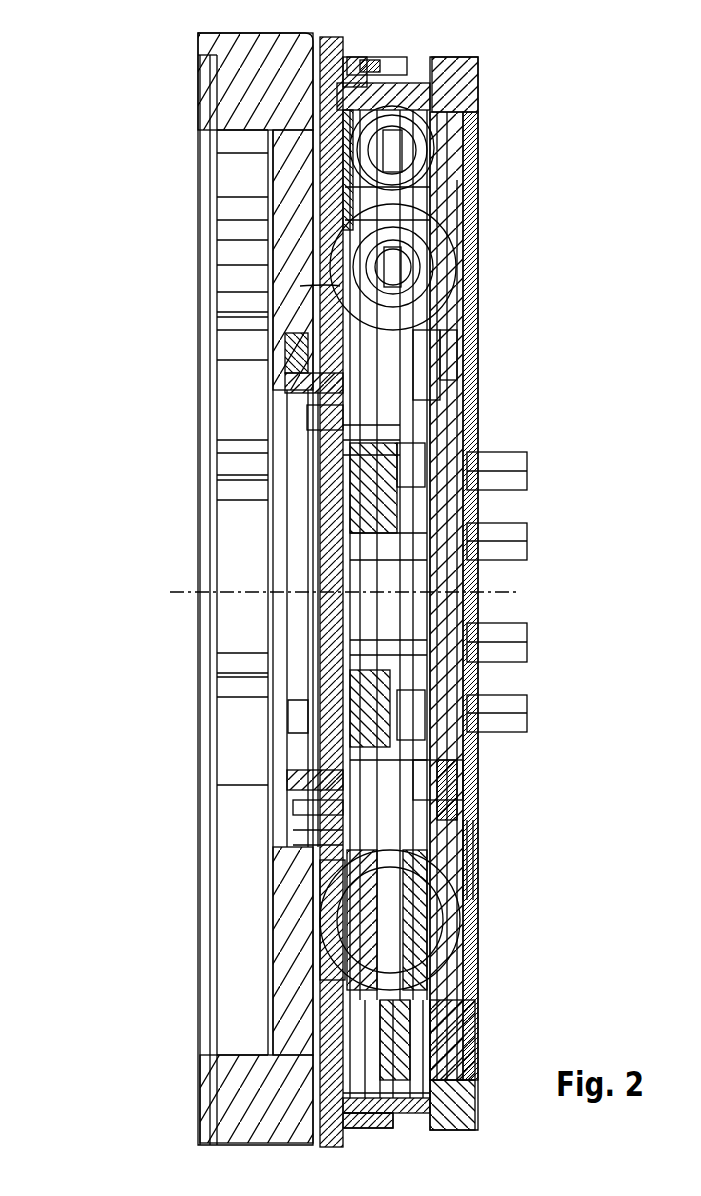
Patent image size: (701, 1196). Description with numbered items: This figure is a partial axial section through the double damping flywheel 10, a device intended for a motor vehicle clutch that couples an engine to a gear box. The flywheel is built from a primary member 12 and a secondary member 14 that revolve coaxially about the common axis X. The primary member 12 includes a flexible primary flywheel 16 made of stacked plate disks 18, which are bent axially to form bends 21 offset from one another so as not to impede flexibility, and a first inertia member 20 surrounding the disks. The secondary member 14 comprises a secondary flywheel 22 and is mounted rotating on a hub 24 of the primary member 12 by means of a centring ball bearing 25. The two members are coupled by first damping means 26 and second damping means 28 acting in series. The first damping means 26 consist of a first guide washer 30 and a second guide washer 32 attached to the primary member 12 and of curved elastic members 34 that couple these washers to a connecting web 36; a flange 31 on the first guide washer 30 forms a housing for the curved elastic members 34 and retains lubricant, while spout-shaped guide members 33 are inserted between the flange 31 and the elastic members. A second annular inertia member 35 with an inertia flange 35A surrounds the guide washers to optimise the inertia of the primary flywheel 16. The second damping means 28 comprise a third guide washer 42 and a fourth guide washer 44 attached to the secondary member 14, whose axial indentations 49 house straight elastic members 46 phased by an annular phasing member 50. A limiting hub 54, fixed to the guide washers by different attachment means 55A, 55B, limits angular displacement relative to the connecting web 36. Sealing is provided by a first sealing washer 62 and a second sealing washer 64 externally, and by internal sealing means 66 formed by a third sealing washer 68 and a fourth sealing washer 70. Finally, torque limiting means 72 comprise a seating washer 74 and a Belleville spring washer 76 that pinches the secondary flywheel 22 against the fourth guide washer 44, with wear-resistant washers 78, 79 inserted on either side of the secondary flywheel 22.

The double damping flywheel 10 is at (118, 44).
The primary member 12 is at (535, 127).
The secondary member 14 is at (188, 88).
The flexible primary flywheel 16 is at (497, 180).
The plate disks 18 is at (483, 877).
The first inertia member 20 is at (490, 142).
The bends 21 is at (480, 850).
The secondary flywheel 22 is at (300, 172).
The hub 24 is at (467, 660).
The centring ball bearing 25 is at (410, 577).
The first damping means 26 is at (478, 72).
The second damping means 28 is at (480, 313).
The first guide washer 30 is at (400, 78).
The flange 31 is at (358, 64).
The second guide washer 32 is at (318, 100).
The guide members 33 is at (383, 65).
The curved elastic members 34 is at (483, 108).
The second annular inertia member 35 is at (317, 1120).
The inertia flange 35A is at (398, 1110).
The connecting web 36 is at (440, 397).
The third guide washer 42 is at (478, 960).
The fourth guide washer 44 is at (317, 913).
The straight elastic members 46 is at (480, 268).
The axial indentations 49 is at (347, 273).
The annular phasing member 50 is at (307, 367).
The limiting hub 54 is at (450, 510).
The attachment means 55A is at (340, 425).
The attachment means 55B is at (463, 787).
The first sealing washer 62 is at (300, 218).
The second sealing washer 64 is at (483, 193).
The internal sealing means 66 is at (300, 290).
The third sealing washer 68 is at (307, 330).
The fourth sealing washer 70 is at (467, 353).
The torque limiting means 72 is at (257, 760).
The seating washer 74 is at (297, 793).
The spring washer 76 is at (293, 817).
The wear-resistant washer 78 is at (300, 833).
The wear-resistant washer 79 is at (457, 807).
The axis X is at (183, 590).